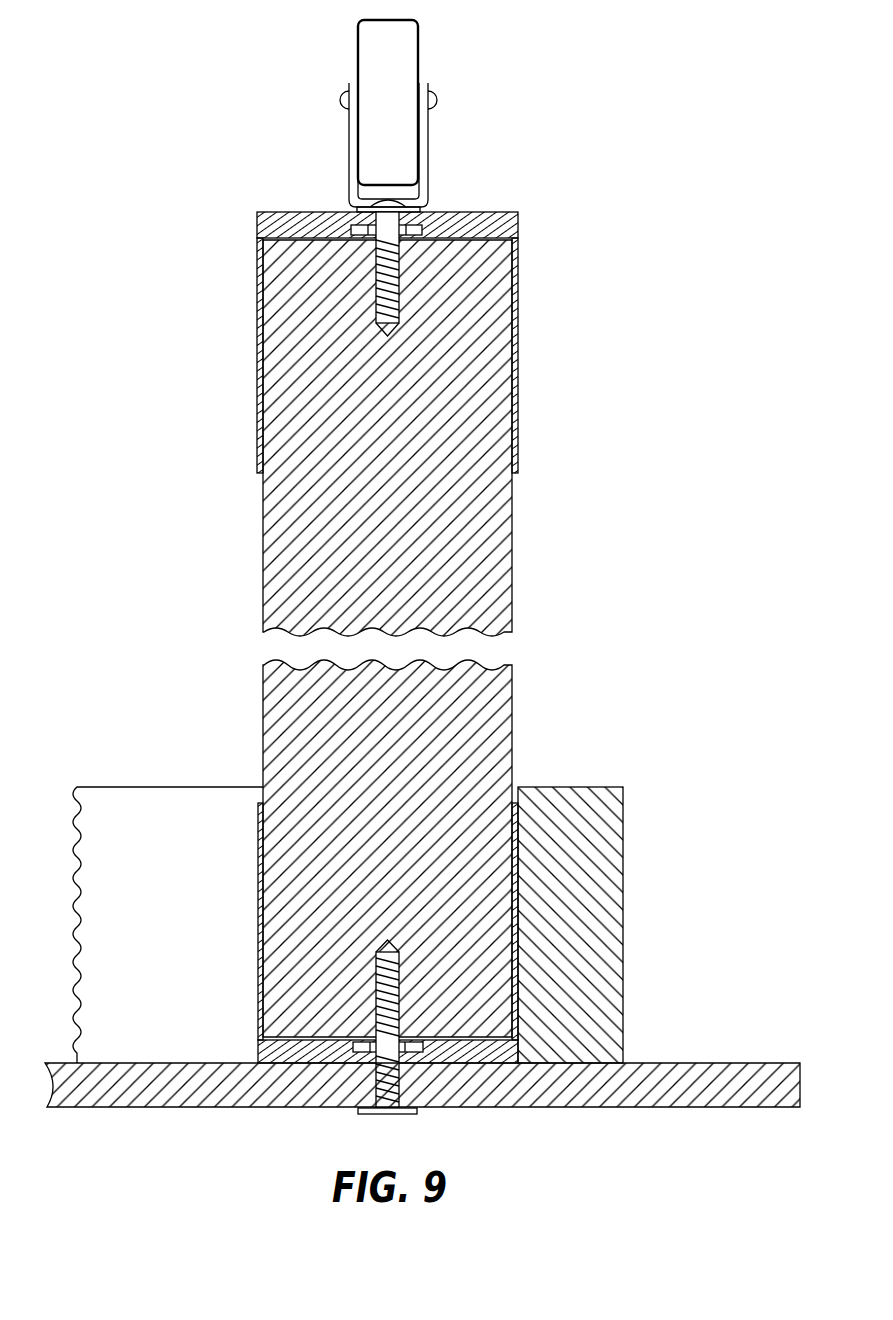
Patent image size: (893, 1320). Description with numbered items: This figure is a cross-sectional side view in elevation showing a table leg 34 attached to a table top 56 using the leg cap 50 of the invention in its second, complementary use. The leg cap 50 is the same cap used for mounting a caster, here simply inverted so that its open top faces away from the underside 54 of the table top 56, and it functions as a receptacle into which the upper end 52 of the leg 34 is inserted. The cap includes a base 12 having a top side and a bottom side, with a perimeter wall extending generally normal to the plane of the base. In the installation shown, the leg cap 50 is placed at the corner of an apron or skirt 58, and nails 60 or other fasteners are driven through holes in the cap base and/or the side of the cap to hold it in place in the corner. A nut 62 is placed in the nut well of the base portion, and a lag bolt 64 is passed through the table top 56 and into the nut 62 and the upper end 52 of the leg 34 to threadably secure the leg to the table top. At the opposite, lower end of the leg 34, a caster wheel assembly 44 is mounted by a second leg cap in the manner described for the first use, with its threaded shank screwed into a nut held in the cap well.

The base 12 is at (303, 213).
The leg 34 is at (514, 540).
The caster wheel assembly 44 is at (348, 120).
The leg cap 50 is at (256, 842).
The upper end 52 is at (513, 768).
The underside 54 is at (712, 1052).
The table top 56 is at (160, 1092).
The apron or skirt 58 is at (558, 787).
The nails 60 is at (312, 1053).
The nut 62 is at (362, 1052).
The lag bolt 64 is at (393, 1116).